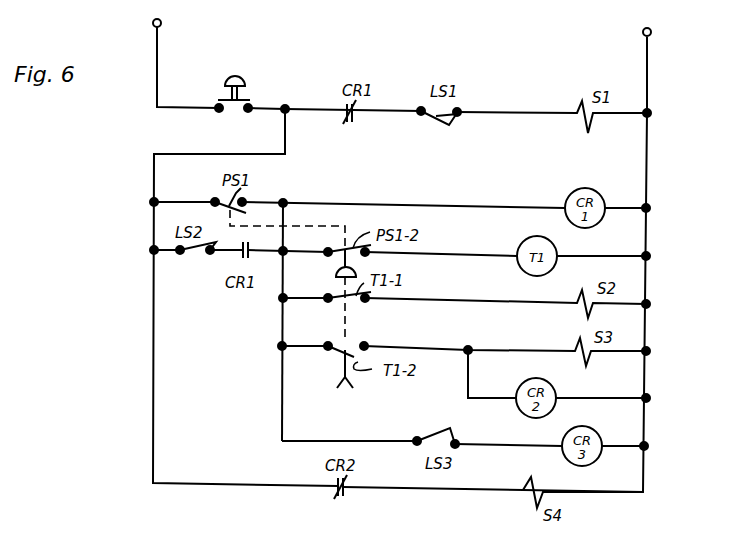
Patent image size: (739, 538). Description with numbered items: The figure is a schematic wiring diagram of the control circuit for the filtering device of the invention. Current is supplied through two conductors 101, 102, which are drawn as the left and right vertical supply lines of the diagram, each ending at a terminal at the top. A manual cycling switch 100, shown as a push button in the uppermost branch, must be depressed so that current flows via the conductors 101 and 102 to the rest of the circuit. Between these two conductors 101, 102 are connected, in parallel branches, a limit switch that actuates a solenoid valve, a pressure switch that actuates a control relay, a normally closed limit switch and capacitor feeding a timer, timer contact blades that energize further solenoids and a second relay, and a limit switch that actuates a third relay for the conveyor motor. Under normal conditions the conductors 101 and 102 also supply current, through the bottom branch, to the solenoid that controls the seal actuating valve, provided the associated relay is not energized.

The manual cycling switch 100 is at (242, 78).
The conductor 101 is at (157, 52).
The conductor 102 is at (647, 78).